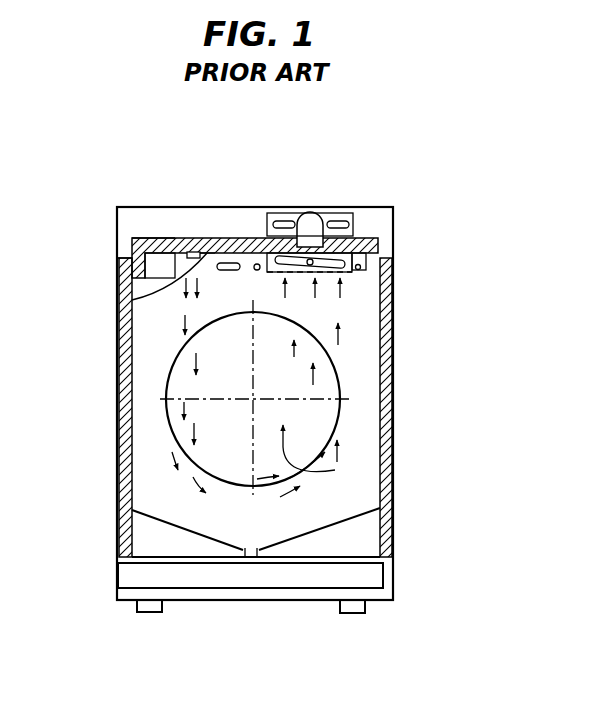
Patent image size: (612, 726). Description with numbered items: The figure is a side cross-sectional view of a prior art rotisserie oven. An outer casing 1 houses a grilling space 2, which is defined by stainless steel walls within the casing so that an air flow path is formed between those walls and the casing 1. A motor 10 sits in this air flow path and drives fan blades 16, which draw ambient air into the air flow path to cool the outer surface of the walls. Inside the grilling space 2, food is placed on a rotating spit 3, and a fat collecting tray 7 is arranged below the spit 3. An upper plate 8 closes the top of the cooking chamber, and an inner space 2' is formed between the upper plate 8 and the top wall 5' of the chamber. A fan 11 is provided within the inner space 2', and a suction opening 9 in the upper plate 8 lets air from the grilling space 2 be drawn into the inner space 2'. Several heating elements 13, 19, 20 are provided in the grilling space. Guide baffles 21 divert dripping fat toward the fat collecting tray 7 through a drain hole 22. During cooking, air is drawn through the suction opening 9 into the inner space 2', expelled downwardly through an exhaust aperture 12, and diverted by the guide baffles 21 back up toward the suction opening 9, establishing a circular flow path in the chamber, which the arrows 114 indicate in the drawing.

The casing 1 is at (117, 238).
The grilling space 2 is at (399, 407).
The inner space 2' is at (212, 203).
The spit 3 is at (335, 385).
The top wall 5' is at (153, 196).
The fat collecting tray 7 is at (140, 596).
The upper plate 8 is at (233, 245).
The suction opening 9 is at (306, 277).
The motor 10 is at (313, 225).
The fan 11 is at (340, 236).
The exhaust aperture 12 is at (132, 298).
The heating element 13 is at (193, 252).
The fan blades 16 is at (340, 225).
The heating element 19 is at (228, 272).
The heating element 20 is at (366, 270).
The guide baffles 21 is at (203, 525).
The drain hole 22 is at (255, 545).
The air circulation path 114 is at (333, 470).